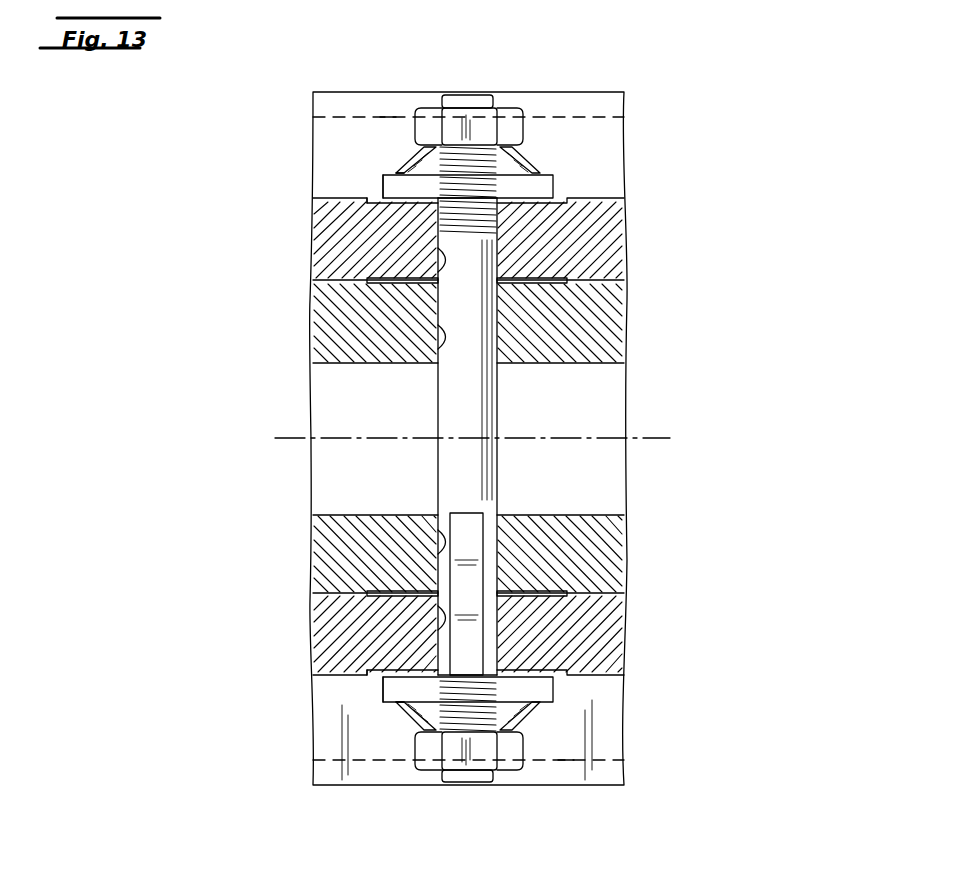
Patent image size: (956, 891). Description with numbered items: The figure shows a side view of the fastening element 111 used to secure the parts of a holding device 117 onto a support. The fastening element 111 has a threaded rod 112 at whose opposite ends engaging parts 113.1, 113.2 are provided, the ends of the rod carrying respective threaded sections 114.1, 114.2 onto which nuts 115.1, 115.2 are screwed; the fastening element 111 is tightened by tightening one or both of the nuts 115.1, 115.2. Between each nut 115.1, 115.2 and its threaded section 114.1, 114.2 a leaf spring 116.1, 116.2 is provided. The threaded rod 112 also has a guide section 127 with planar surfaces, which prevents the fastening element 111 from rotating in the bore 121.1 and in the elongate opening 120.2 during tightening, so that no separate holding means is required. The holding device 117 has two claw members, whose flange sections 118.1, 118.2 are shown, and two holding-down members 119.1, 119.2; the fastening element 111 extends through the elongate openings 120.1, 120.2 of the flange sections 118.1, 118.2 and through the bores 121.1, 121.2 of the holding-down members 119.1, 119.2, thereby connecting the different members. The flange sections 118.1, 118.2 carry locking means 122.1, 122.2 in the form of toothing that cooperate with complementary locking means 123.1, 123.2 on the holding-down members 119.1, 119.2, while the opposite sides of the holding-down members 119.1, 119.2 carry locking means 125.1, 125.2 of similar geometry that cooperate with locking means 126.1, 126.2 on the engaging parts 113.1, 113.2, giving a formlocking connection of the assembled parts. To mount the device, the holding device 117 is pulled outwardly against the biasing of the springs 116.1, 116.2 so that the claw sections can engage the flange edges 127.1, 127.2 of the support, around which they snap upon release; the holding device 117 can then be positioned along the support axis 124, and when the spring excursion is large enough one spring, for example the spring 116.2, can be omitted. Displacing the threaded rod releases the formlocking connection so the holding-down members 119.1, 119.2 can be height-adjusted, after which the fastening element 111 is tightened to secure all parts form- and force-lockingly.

The fastening element 111 is at (521, 393).
The threaded rod 112 is at (480, 412).
The engaging part 113.1 is at (555, 186).
The engaging part 113.2 is at (555, 690).
The threaded section 114.1 is at (540, 168).
The threaded section 114.2 is at (545, 718).
The nut 115.1 is at (511, 125).
The nut 115.2 is at (427, 750).
The leaf spring 116.1 is at (425, 166).
The leaf spring 116.2 is at (425, 718).
The holding device 117 is at (754, 188).
The flange section 118.1 is at (590, 322).
The flange section 118.2 is at (590, 553).
The holding-down member 119.1 is at (595, 228).
The holding-down member 119.2 is at (597, 648).
The elongate opening 120.1 is at (440, 345).
The elongate opening 120.2 is at (440, 530).
The bore 121.1 is at (440, 265).
The bore 121.2 is at (440, 616).
The locking means 122.1 is at (430, 283).
The locking means 122.2 is at (435, 588).
The complementary locking means 123.1 is at (560, 275).
The complementary locking means 123.2 is at (557, 598).
The support axis 124 is at (290, 437).
The locking means 125.1 is at (388, 205).
The locking means 125.2 is at (398, 672).
The locking means 126.1 is at (387, 196).
The locking means 126.2 is at (385, 700).
The guide section 127 is at (460, 513).
The flange edge 127.1 is at (388, 115).
The flange edge 127.2 is at (565, 765).